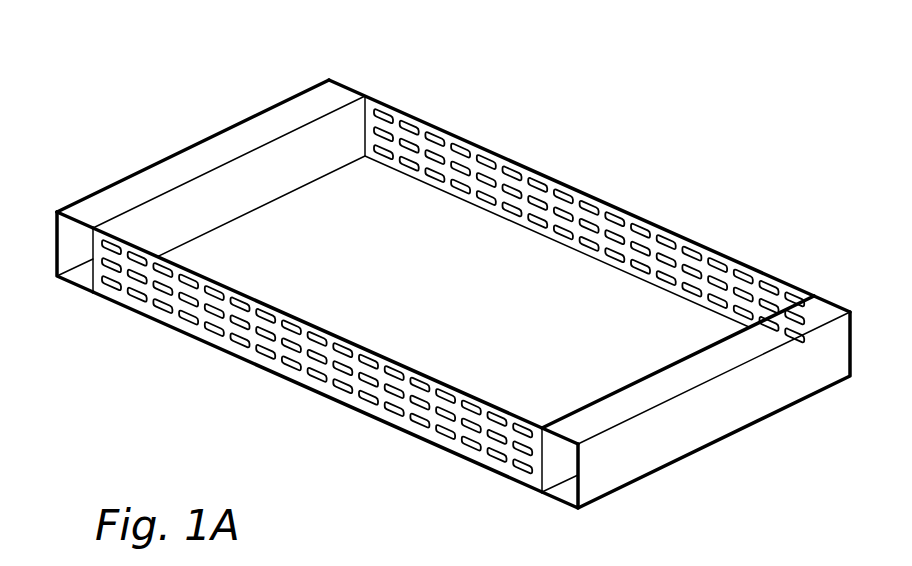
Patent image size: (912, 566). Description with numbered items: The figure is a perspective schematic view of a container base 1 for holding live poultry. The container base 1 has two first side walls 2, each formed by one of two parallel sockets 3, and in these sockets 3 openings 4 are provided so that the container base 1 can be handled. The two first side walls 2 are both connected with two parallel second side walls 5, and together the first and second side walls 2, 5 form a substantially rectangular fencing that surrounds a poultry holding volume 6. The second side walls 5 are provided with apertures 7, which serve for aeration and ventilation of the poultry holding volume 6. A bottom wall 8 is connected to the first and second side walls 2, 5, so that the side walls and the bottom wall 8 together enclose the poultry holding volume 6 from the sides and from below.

The container base 1 is at (78, 93).
The first side wall 2 is at (215, 128).
The socket 3 is at (337, 95).
The opening 4 is at (80, 270).
The second side wall 5 is at (587, 188).
The poultry holding volume 6 is at (460, 318).
The aperture 7 is at (460, 192).
The bottom wall 8 is at (623, 308).